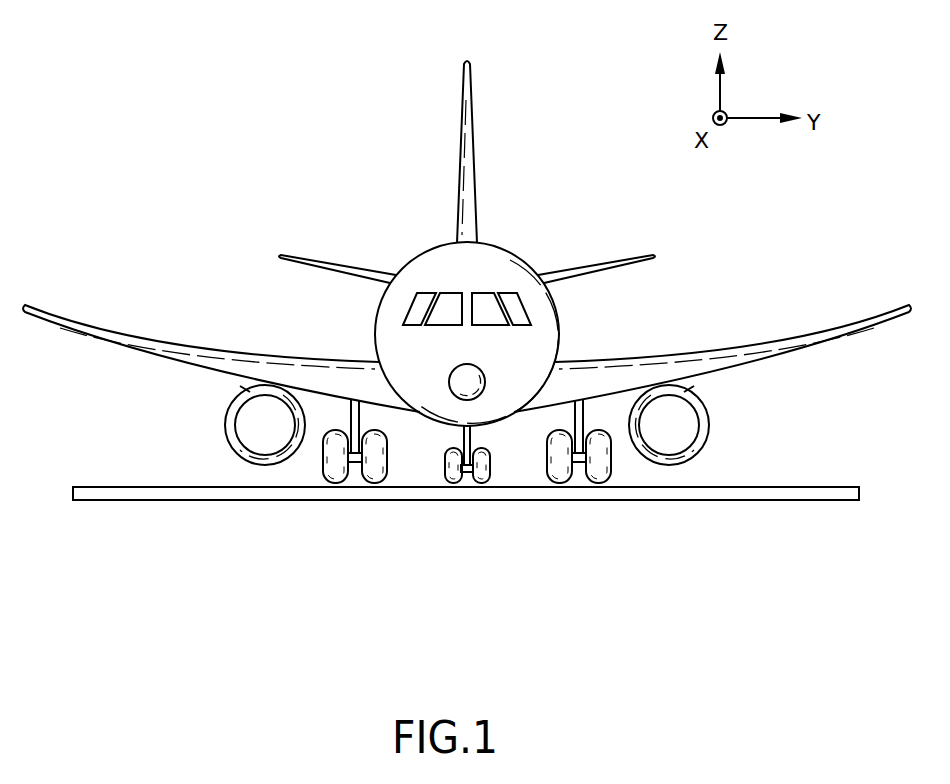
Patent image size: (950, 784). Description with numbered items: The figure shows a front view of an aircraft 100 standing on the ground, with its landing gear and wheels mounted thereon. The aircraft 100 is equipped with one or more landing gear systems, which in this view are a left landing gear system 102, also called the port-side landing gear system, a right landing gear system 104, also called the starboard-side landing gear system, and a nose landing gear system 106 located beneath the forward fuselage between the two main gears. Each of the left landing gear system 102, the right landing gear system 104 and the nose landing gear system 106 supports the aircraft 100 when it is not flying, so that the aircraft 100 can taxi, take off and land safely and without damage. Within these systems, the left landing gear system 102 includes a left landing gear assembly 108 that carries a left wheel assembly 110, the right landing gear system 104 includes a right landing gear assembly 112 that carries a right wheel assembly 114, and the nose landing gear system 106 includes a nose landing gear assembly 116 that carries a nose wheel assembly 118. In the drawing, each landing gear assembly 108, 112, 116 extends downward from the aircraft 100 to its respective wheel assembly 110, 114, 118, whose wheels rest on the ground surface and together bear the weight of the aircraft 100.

The aircraft 100 is at (300, 148).
The left landing gear system 102 is at (648, 482).
The right landing gear system 104 is at (302, 446).
The nose landing gear system 106 is at (432, 511).
The left landing gear assembly 108 is at (566, 509).
The left wheel assembly 110 is at (578, 462).
The right landing gear assembly 112 is at (345, 448).
The right wheel assembly 114 is at (356, 466).
The nose landing gear assembly 116 is at (470, 427).
The nose wheel assembly 118 is at (469, 478).